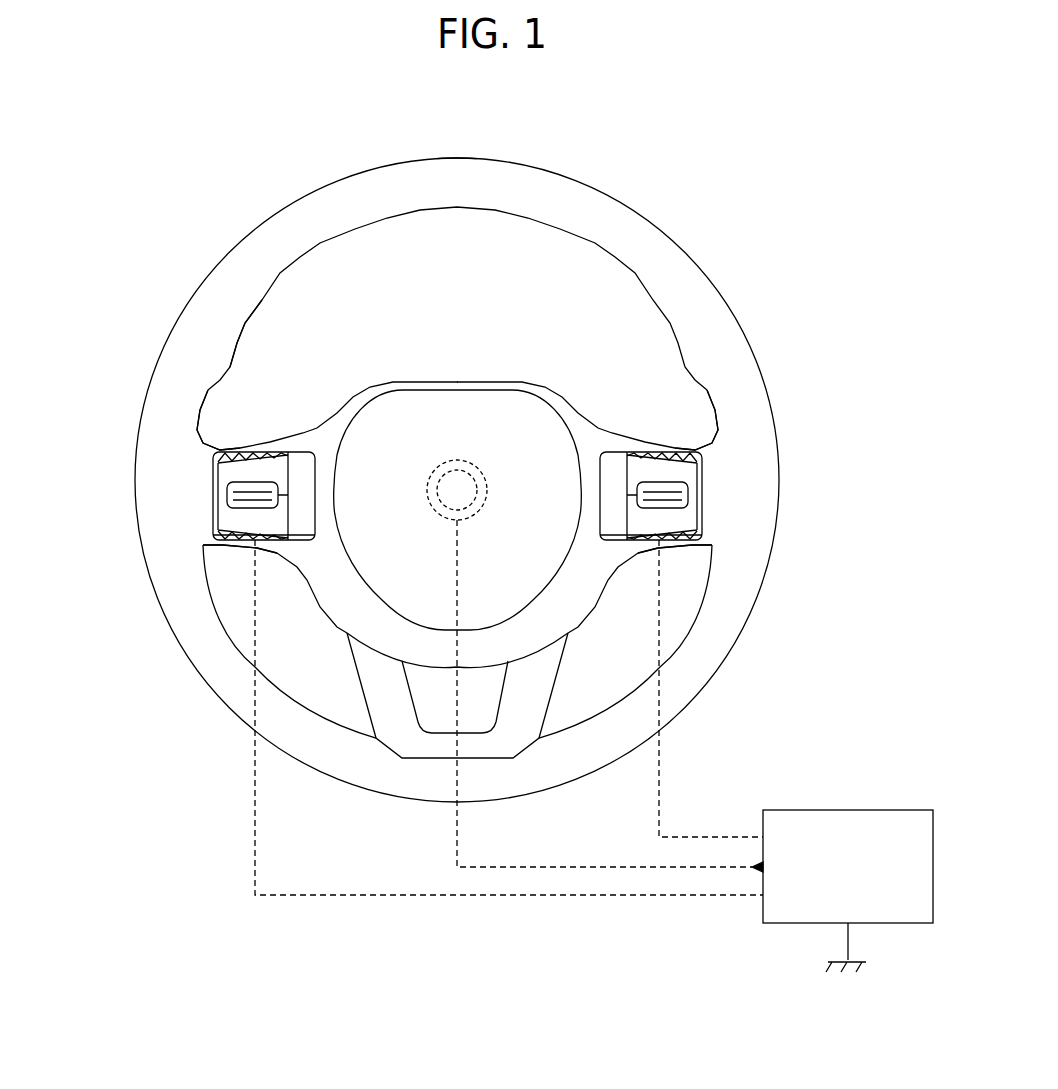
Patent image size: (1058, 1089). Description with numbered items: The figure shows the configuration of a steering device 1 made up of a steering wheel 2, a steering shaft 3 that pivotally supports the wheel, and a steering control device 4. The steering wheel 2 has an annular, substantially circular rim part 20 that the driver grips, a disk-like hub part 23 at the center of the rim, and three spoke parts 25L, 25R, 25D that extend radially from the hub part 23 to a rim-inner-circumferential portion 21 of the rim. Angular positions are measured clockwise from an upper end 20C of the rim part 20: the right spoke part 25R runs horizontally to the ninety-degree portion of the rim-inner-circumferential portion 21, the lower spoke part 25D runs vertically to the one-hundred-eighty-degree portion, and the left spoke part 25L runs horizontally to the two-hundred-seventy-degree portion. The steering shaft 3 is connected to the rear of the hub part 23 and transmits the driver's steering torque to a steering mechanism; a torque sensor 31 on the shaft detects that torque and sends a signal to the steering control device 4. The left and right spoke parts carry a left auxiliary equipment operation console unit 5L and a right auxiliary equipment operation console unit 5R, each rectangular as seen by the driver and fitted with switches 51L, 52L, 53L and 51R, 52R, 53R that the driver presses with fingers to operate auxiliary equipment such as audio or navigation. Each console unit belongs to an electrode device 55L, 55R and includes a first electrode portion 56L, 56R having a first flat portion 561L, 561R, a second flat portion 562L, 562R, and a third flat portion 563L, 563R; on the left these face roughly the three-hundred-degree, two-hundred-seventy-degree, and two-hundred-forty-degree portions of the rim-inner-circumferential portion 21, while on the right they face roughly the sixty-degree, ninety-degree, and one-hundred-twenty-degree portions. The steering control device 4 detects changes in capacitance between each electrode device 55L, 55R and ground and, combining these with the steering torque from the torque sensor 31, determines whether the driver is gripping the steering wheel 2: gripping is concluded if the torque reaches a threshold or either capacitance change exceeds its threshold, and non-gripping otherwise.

The steering device 1 is at (847, 161).
The steering wheel 2 is at (588, 194).
The rim part 20 is at (365, 183).
The upper end of the rim part 20C is at (456, 167).
The rim-inner-circumferential portion 21 is at (237, 349).
The hub part 23 is at (383, 385).
The steering shaft 3 is at (449, 460).
The torque sensor 31 is at (466, 470).
The left spoke part 25L is at (304, 437).
The right spoke part 25R is at (611, 437).
The lower spoke part 25D is at (550, 652).
The left auxiliary equipment operation console unit 5L is at (207, 437).
The right auxiliary equipment operation console unit 5R is at (708, 437).
The switch 51L is at (213, 537).
The switch 51R is at (702, 537).
The switch 52L is at (218, 472).
The switch 52R is at (697, 472).
The switch 53L is at (218, 497).
The switch 53R is at (697, 497).
The electrode device 55L is at (206, 546).
The electrode device 55R is at (709, 546).
The first electrode portion 56L is at (213, 455).
The first electrode portion 56R is at (700, 455).
The first flat portion 561L is at (250, 452).
The first flat portion 561R is at (665, 452).
The second flat portion 562L is at (215, 518).
The second flat portion 562R is at (700, 512).
The third flat portion 563L is at (285, 542).
The third flat portion 563R is at (633, 542).
The steering control device 4 is at (900, 810).